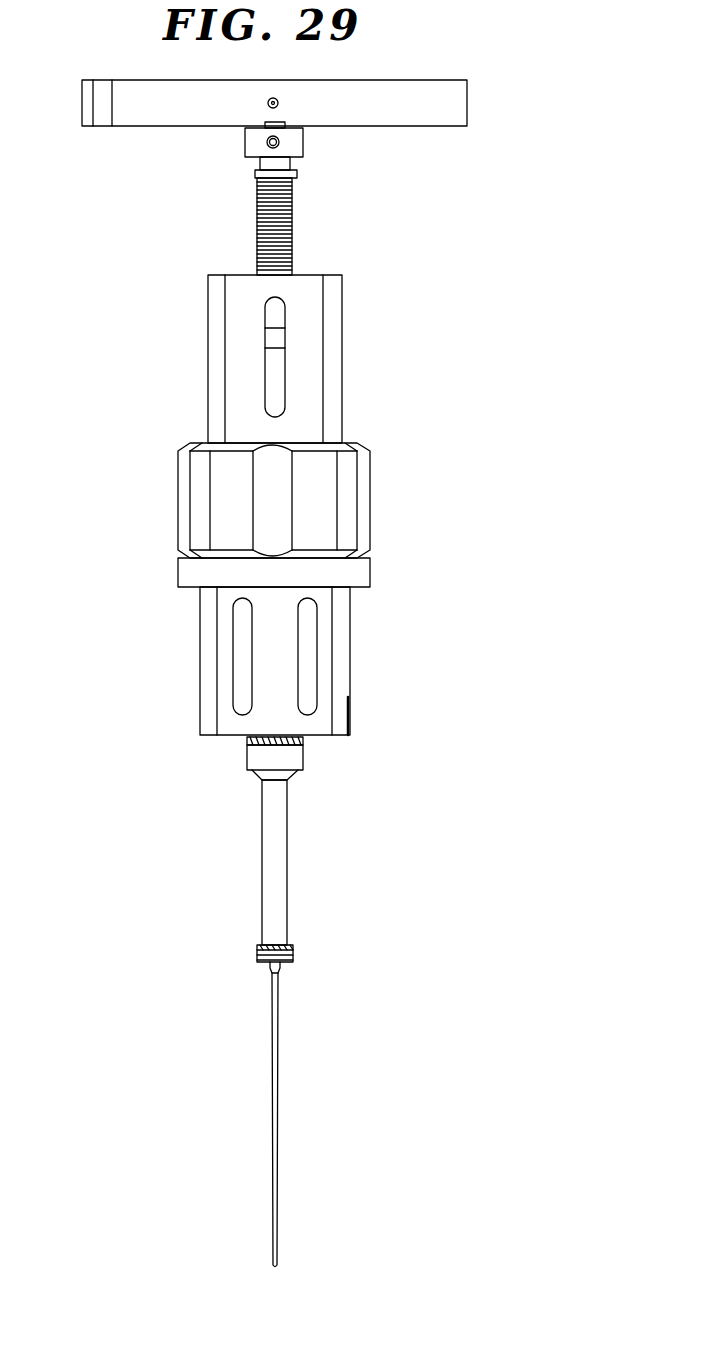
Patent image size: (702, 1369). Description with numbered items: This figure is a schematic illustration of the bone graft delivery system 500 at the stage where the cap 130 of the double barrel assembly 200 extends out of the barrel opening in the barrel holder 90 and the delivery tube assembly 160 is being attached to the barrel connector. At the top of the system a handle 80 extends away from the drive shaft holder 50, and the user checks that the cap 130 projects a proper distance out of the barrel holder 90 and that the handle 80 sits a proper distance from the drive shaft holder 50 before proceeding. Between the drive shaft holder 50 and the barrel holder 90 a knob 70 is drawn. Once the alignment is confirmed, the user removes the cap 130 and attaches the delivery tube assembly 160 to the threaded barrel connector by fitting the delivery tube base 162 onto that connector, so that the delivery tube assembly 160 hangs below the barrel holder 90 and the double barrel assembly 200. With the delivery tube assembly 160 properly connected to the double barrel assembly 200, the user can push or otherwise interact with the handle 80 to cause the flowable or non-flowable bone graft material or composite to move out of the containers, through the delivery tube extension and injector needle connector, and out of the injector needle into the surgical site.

The handle 80 is at (460, 102).
The drive shaft holder 50 is at (196, 368).
The adjustment knob 70 is at (168, 502).
The bone graft delivery system 500 is at (310, 322).
The double barrel assembly 200 is at (306, 909).
The barrel holder 90 is at (189, 660).
The cap 130 is at (251, 742).
The delivery tube base 162 is at (246, 757).
The delivery tube assembly 160 is at (303, 877).